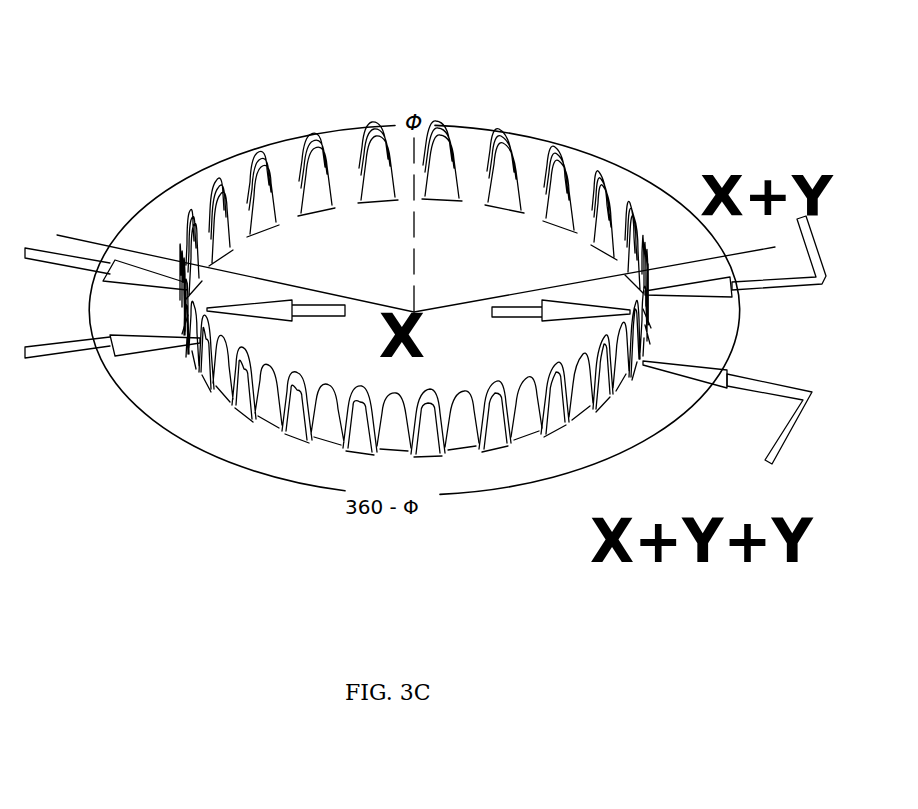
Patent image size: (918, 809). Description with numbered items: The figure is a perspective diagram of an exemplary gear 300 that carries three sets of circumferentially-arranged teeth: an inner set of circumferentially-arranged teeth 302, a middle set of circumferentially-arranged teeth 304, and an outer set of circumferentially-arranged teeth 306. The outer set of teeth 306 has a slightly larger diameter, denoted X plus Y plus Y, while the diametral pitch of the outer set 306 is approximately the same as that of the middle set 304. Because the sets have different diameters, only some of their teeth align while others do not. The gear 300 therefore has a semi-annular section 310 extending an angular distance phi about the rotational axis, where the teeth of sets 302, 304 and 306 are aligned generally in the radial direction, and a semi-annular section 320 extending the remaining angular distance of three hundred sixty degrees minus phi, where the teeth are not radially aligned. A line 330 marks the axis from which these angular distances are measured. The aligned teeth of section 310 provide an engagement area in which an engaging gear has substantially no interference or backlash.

The gear 300 is at (607, 62).
The inner set of circumferentially-arranged teeth 302 is at (362, 168).
The middle set of circumferentially-arranged teeth 304 is at (441, 145).
The outer set of circumferentially-arranged teeth 306 is at (503, 148).
The semi-annular section 310 is at (356, 254).
The semi-annular section 320 is at (348, 361).
The center axis line 330 is at (415, 250).